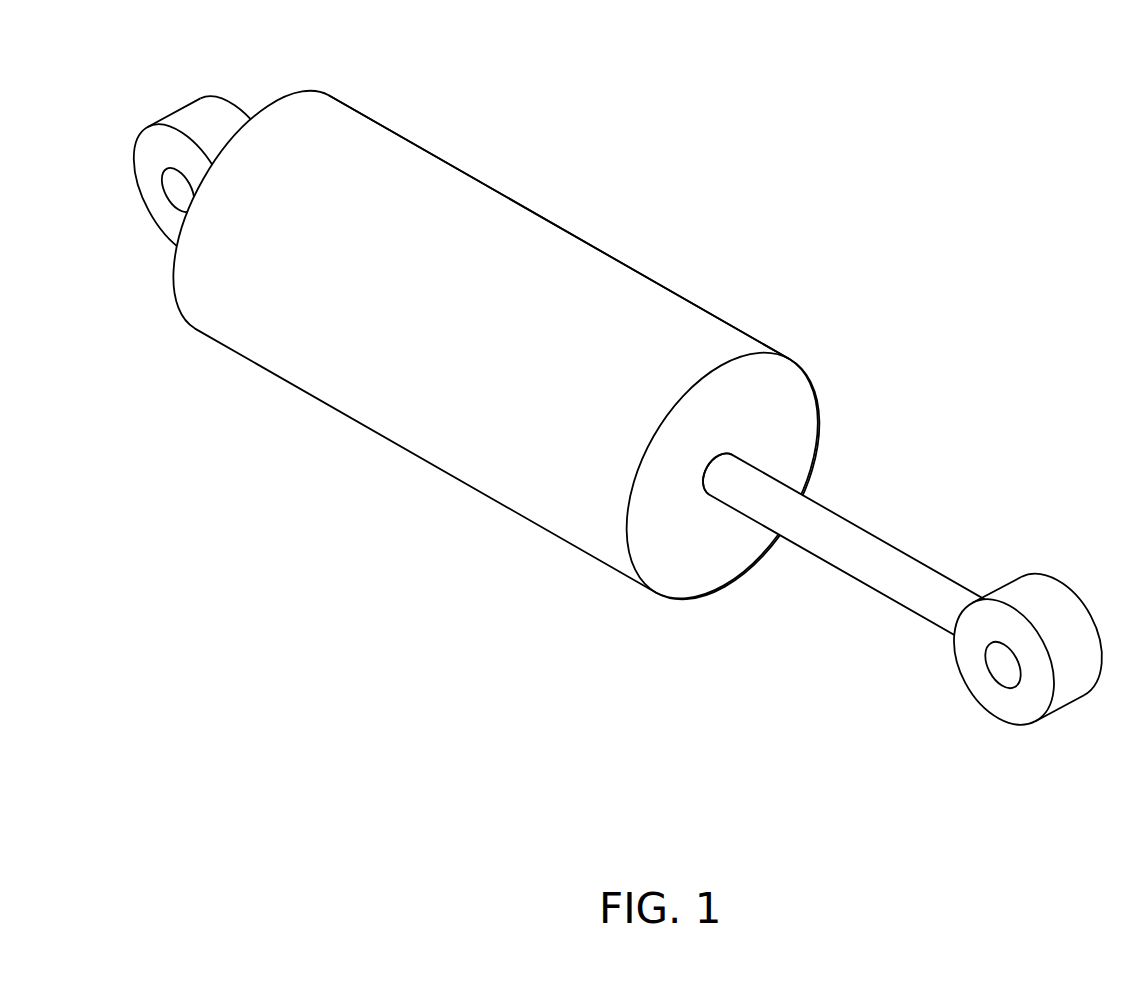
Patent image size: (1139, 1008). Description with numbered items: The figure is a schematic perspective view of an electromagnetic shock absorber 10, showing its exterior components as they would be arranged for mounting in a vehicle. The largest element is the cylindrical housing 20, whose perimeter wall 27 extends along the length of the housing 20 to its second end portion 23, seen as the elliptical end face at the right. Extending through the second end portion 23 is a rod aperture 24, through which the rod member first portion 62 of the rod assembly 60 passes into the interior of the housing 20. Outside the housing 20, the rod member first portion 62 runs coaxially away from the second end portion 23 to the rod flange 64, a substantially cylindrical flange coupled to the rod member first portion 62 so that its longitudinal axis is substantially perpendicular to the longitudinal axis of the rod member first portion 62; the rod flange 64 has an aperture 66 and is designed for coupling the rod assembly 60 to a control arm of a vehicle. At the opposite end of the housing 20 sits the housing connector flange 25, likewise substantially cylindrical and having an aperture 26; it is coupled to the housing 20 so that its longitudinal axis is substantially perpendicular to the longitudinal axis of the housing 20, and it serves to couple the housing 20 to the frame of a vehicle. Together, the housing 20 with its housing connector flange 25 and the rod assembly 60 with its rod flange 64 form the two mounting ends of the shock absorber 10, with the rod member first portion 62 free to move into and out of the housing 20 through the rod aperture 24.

The electromagnetic shock absorber 10 is at (174, 556).
The housing 20 is at (405, 468).
The second end portion 23 is at (793, 433).
The rod aperture 24 is at (700, 504).
The housing connector flange 25 is at (207, 107).
The aperture 26 is at (172, 193).
The perimeter wall 27 is at (735, 325).
The rod assembly 60 is at (949, 534).
The rod member first portion 62 is at (848, 580).
The rod flange 64 is at (1027, 717).
The aperture 66 is at (982, 675).